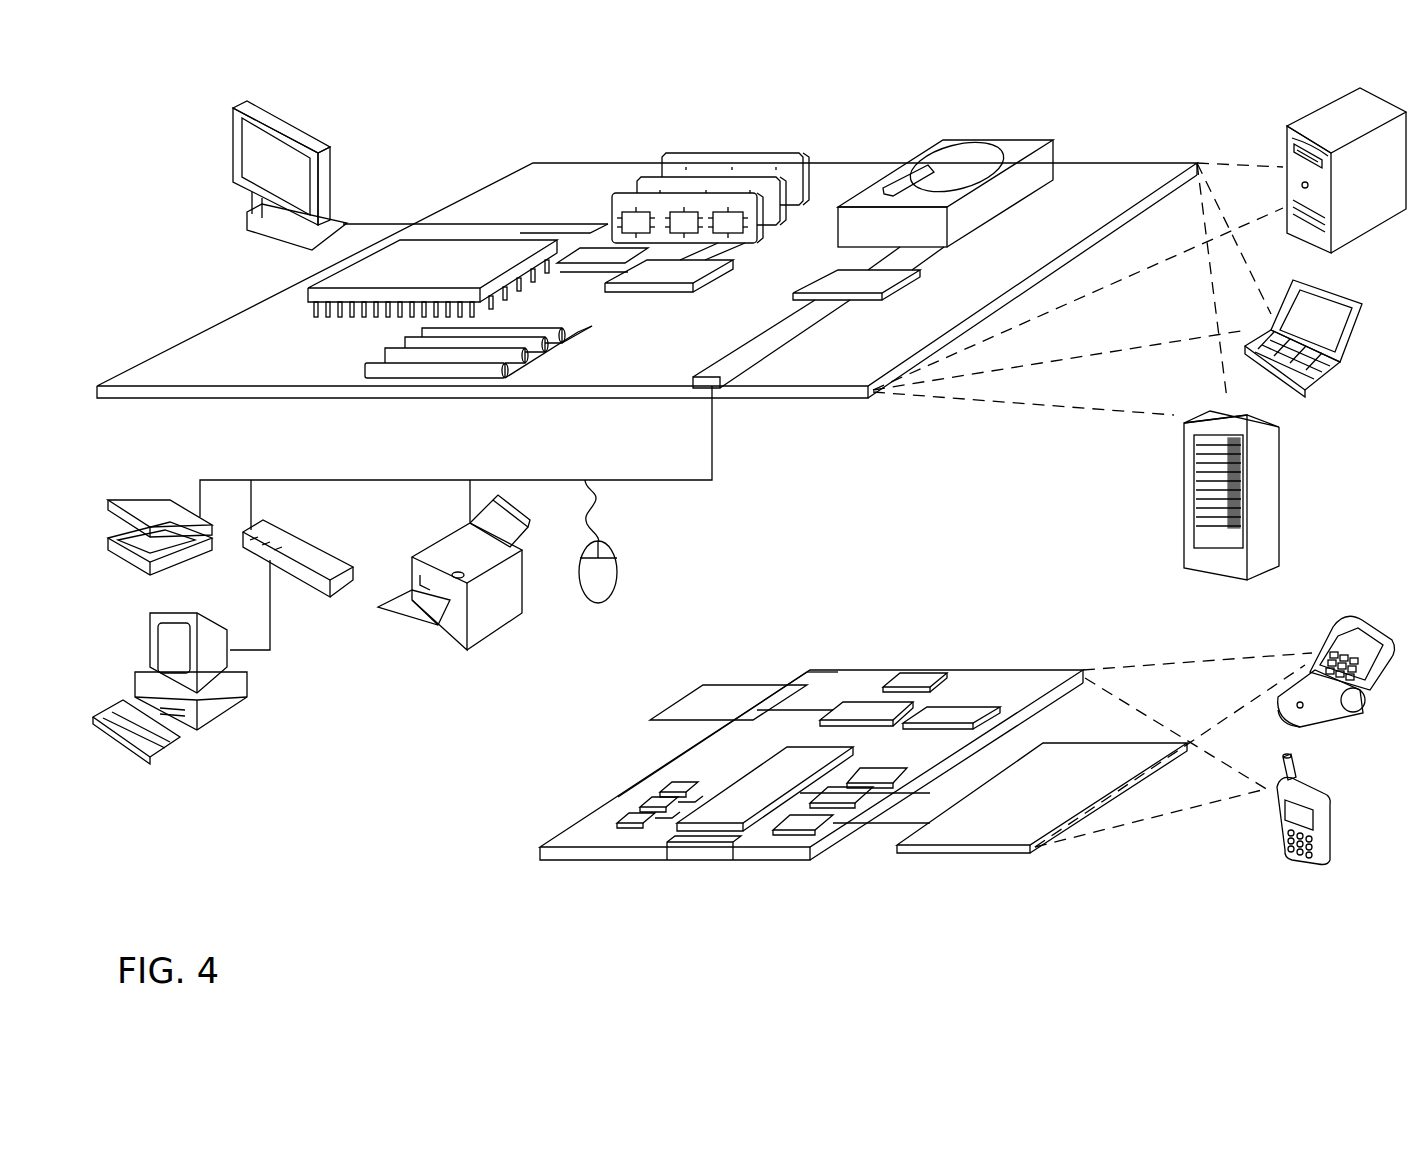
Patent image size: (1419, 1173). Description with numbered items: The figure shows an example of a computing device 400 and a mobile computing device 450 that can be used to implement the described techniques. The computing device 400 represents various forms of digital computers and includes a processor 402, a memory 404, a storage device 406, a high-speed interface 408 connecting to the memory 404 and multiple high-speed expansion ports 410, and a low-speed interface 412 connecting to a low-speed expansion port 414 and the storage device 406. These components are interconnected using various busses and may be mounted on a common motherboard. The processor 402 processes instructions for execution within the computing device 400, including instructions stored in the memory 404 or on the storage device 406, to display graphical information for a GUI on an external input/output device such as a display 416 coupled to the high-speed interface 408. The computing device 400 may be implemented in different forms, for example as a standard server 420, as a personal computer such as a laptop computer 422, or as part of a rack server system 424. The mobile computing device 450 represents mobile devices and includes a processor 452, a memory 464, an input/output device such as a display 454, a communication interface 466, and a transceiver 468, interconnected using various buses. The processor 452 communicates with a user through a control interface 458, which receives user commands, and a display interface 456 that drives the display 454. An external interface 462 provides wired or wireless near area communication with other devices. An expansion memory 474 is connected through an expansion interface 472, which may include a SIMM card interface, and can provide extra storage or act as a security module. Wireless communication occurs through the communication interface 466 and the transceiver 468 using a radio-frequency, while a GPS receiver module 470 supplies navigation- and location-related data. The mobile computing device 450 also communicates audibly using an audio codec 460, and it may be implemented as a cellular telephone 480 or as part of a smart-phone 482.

The computing device 400 is at (455, 129).
The processor 402 is at (317, 293).
The memory 404 is at (675, 154).
The storage device 406 is at (943, 144).
The high-speed interface 408 is at (647, 272).
The high-speed expansion ports 410 is at (383, 357).
The low-speed interface 412 is at (838, 292).
The low-speed expansion port 414 is at (737, 388).
The display 416 is at (243, 105).
The standard server 420 is at (1288, 143).
The laptop computer 422 is at (1341, 309).
The rack server system 424 is at (1184, 523).
The mobile computing device 450 is at (508, 866).
The processor 452 is at (735, 820).
The display 454 is at (996, 836).
The display interface 456 is at (828, 827).
The control interface 458 is at (869, 805).
The audio codec 460 is at (875, 770).
The external interface 462 is at (698, 845).
The memory 464 is at (628, 820).
The communication interface 466 is at (871, 709).
The transceiver 468 is at (947, 717).
The GPS receiver module 470 is at (925, 678).
The expansion interface 472 is at (789, 698).
The expansion memory 474 is at (707, 684).
The cellular telephone 480 is at (1340, 625).
The smart-phone 482 is at (1270, 823).